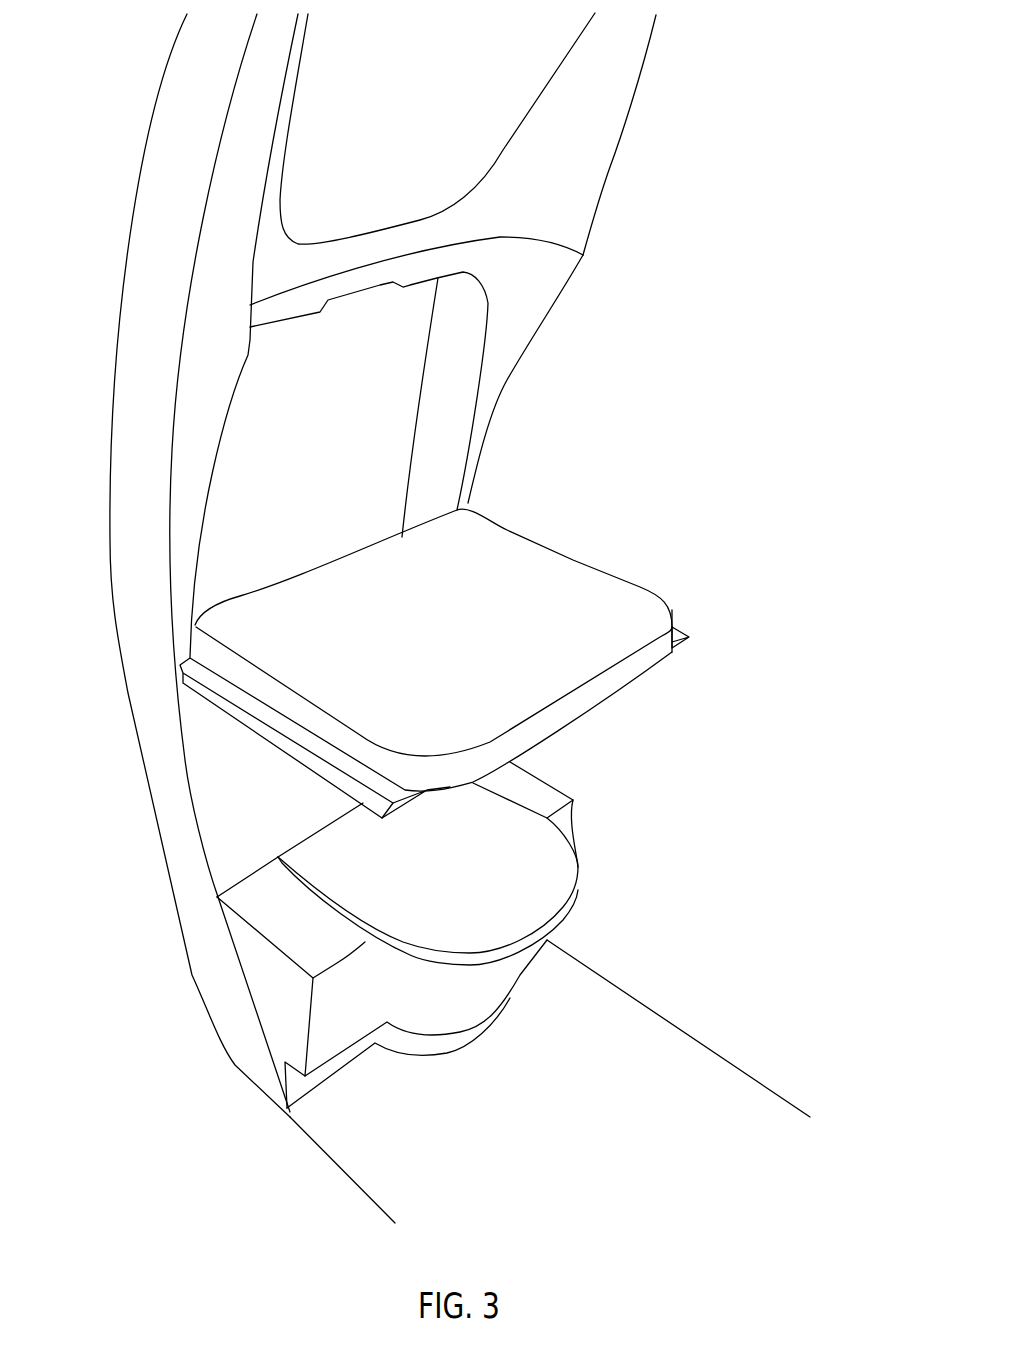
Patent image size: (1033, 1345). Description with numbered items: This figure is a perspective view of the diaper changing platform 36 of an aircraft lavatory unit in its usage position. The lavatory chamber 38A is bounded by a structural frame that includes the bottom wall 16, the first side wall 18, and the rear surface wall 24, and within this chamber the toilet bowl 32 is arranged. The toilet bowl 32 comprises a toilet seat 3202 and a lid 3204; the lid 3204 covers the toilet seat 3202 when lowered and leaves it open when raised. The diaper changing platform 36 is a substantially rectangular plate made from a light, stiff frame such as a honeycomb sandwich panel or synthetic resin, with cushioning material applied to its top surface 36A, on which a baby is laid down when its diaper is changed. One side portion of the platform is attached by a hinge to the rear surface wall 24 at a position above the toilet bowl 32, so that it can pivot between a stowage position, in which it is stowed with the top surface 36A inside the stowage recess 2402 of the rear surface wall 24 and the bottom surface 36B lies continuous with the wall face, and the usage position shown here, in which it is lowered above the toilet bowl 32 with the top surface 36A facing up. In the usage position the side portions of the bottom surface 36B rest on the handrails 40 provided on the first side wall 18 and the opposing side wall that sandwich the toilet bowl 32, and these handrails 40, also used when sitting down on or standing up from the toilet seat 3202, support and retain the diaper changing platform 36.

The rear surface wall 24 is at (145, 163).
The stowage recess 2402 is at (357, 419).
The diaper changing platform 36 is at (466, 614).
The top surface 36A is at (555, 597).
The bottom surface 36B is at (593, 707).
The lavatory chamber 38A is at (446, 628).
The handrails 40 is at (689, 637).
The toilet bowl 32 is at (468, 935).
The lid 3204 is at (530, 890).
The toilet seat 3202 is at (480, 987).
The first side wall 18 is at (737, 1007).
The bottom wall 16 is at (393, 1157).